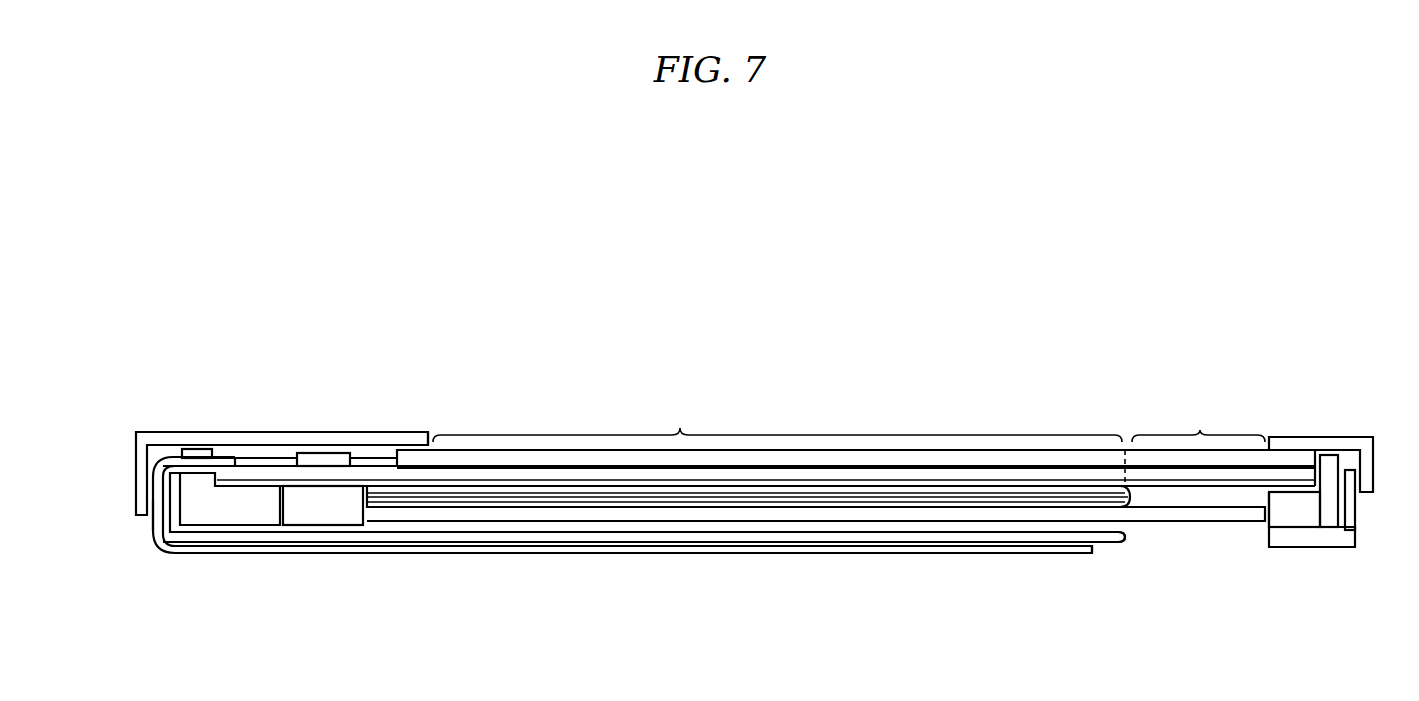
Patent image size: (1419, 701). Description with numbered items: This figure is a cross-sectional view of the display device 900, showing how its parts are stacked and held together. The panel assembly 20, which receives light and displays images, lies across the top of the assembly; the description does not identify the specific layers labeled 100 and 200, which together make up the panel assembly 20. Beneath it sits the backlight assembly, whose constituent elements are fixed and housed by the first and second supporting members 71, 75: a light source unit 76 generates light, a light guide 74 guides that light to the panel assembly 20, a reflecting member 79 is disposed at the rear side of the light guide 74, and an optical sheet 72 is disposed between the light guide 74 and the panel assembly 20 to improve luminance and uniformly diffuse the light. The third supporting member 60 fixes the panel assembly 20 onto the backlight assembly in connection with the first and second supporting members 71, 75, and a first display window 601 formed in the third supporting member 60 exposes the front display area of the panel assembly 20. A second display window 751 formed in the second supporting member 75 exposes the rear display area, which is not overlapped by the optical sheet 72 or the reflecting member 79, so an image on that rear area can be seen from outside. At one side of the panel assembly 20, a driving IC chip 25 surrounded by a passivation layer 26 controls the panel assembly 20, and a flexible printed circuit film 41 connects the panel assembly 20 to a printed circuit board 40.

The display device 900 is at (858, 359).
The third supporting member 60 is at (183, 440).
The first display window 601 is at (433, 440).
The printed circuit board 40 is at (421, 551).
The flexible printed circuit film 41 is at (152, 524).
The passivation layer 26 is at (262, 457).
The driving IC chip 25 is at (320, 453).
The panel assembly 20 is at (856, 558).
The window 100 is at (1233, 458).
The display panel 200 is at (1196, 478).
The first supporting member 71 is at (231, 510).
The light source unit 76 is at (317, 510).
The reflecting member 79 is at (950, 530).
The optical sheet 72 is at (1130, 498).
The light guide 74 is at (896, 513).
The second supporting member 75 is at (1002, 546).
The second display window 751 is at (1126, 538).